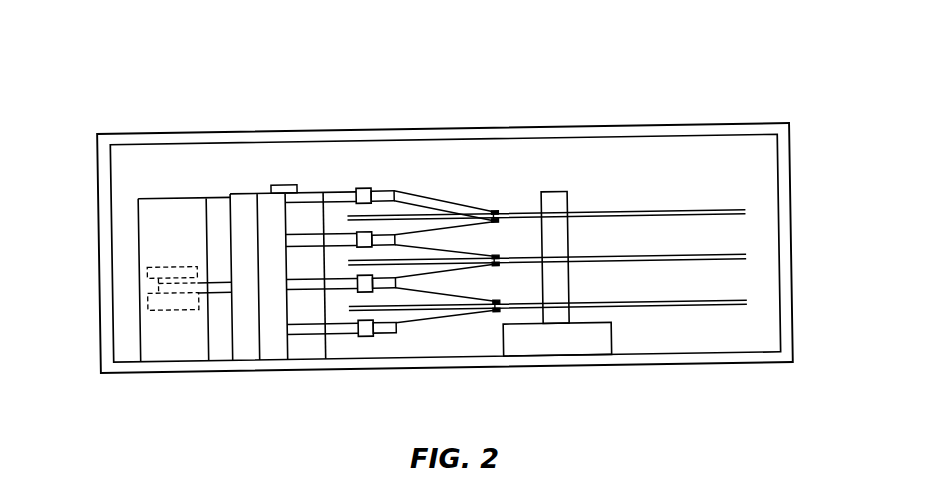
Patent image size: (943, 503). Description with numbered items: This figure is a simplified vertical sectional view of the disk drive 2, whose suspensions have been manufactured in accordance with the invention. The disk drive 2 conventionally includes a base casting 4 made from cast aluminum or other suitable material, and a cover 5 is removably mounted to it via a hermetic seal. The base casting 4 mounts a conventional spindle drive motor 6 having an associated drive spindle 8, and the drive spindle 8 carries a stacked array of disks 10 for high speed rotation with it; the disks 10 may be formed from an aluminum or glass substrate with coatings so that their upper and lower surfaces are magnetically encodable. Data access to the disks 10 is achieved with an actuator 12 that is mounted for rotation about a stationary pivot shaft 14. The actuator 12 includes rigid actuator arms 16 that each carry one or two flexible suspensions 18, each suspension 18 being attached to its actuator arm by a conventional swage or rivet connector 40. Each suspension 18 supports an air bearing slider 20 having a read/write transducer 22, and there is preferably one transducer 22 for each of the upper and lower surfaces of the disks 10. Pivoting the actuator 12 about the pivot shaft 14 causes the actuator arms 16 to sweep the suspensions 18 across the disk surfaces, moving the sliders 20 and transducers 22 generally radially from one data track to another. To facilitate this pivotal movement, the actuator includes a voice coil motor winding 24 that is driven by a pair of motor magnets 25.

The disk drive 2 is at (93, 74).
The base casting 4 is at (338, 368).
The cover 5 is at (200, 128).
The spindle drive motor 6 is at (610, 345).
The drive spindle 8 is at (568, 202).
The disks 10 is at (677, 212).
The actuator 12 is at (268, 352).
The pivot shaft 14 is at (272, 182).
The actuator arms 16 is at (337, 190).
The suspensions 18 is at (432, 195).
The air bearing slider 20 is at (490, 204).
The read/write transducer 22 is at (498, 209).
The voice coil motor winding 24 is at (145, 278).
The motor magnets 25 is at (197, 265).
The swage or rivet connector 40 is at (368, 184).